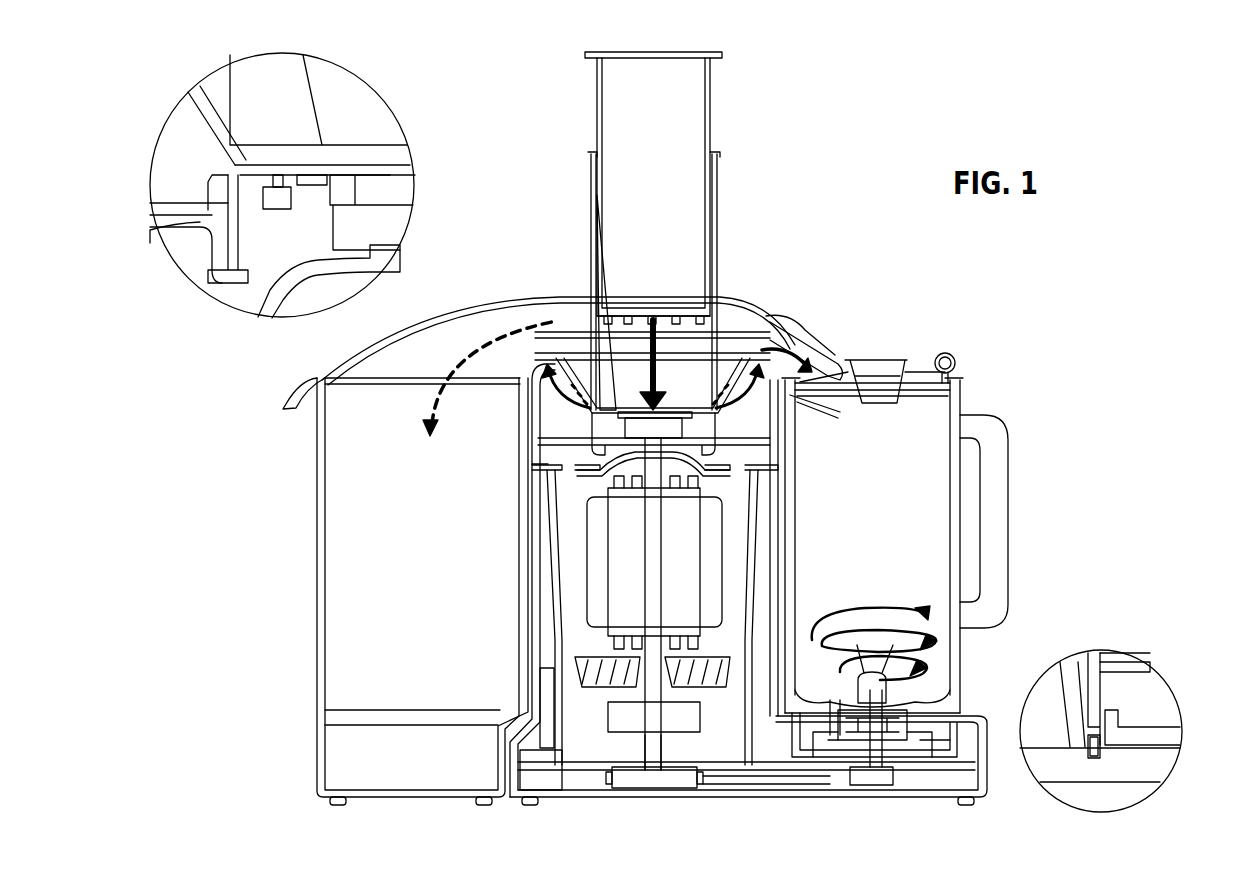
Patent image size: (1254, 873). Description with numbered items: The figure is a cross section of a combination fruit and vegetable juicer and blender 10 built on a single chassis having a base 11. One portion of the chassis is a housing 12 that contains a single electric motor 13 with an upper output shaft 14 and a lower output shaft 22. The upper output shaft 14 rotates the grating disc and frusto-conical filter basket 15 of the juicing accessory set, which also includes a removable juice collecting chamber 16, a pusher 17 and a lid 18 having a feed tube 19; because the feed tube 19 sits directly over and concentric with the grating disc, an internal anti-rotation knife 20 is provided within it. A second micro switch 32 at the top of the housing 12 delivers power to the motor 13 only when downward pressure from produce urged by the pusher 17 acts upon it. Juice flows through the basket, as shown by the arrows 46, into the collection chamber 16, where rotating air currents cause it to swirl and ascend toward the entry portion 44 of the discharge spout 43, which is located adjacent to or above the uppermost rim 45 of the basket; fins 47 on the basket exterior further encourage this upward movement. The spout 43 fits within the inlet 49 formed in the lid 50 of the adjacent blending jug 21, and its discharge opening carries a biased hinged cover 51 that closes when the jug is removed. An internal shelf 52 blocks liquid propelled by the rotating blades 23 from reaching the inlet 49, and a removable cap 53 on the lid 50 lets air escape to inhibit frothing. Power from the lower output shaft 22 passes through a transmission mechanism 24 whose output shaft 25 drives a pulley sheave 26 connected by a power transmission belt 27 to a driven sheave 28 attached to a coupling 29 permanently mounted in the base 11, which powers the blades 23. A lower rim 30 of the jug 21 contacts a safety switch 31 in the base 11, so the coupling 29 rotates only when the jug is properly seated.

The combination fruit and vegetable juicer and blender 10 is at (806, 250).
The base 11 is at (975, 740).
The housing 12 is at (775, 510).
The electric motor 13 is at (684, 566).
The upper output shaft 14 is at (772, 450).
The frusto-conical filter basket 15 is at (728, 360).
The removable juice collecting chamber 16 is at (548, 423).
The pusher 17 is at (690, 103).
The lid 18 is at (560, 345).
The feed tube 19 is at (718, 178).
The internal anti-rotation knife 20 is at (612, 380).
The blending jug 21 is at (965, 400).
The lower output shaft 22 is at (500, 660).
The rotating blades 23 is at (880, 640).
The transmission mechanism 24 is at (650, 714).
The output shaft of the transmission mechanism 25 is at (660, 745).
The shaft coupling 26 is at (672, 780).
The power transmission belt 27 is at (787, 770).
The driven sheave 28 is at (885, 785).
The coupling 29 is at (895, 748).
The lower rim of the jug 30 is at (900, 700).
The safety switch 31 is at (1096, 752).
The second micro switch 32 is at (282, 210).
The discharge spout 43 is at (773, 330).
The spout entry portion 44 is at (800, 350).
The uppermost rim of the filter basket 45 is at (575, 345).
The arrows 46 is at (565, 430).
The fins 47 is at (870, 355).
The inlet 49 is at (817, 380).
The lid of the blender jug 50 is at (978, 400).
The hinged cover 51 is at (823, 395).
The internal shelf 52 is at (837, 413).
The cap 53 is at (912, 355).